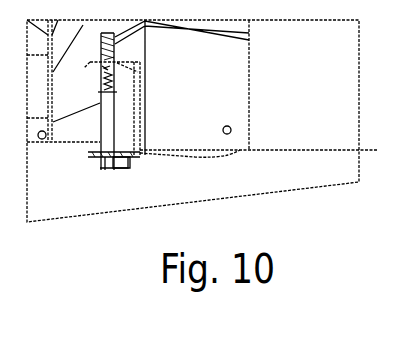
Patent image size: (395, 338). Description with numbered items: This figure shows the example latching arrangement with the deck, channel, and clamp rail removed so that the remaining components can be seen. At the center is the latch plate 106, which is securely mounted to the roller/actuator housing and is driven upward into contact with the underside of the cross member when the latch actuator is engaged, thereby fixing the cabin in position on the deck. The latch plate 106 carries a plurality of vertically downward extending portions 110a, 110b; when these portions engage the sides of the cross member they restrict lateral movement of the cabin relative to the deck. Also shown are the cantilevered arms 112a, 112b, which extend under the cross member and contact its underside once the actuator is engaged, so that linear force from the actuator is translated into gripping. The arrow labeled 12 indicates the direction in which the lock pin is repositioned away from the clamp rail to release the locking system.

The repositioning direction 12 is at (86, 46).
The latch plate 106 is at (140, 103).
The downward extending portion 110a is at (135, 163).
The downward extending portion 110b is at (107, 161).
The cantilevered arm 112a is at (122, 170).
The cantilevered arm 112b is at (115, 172).